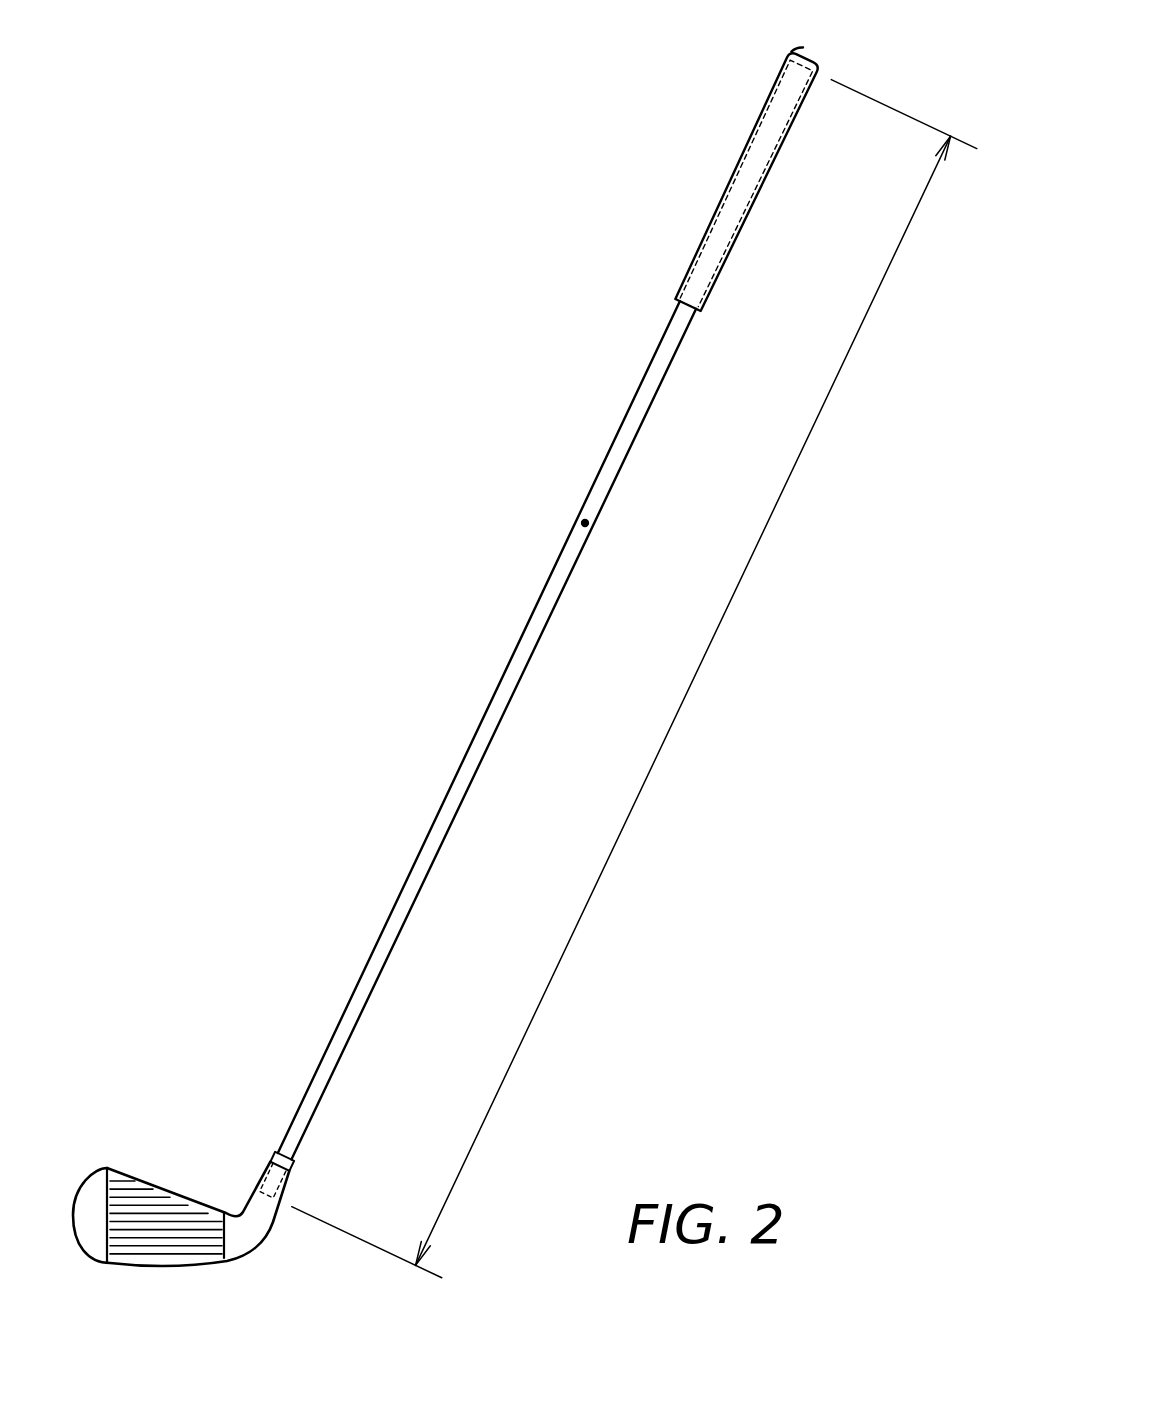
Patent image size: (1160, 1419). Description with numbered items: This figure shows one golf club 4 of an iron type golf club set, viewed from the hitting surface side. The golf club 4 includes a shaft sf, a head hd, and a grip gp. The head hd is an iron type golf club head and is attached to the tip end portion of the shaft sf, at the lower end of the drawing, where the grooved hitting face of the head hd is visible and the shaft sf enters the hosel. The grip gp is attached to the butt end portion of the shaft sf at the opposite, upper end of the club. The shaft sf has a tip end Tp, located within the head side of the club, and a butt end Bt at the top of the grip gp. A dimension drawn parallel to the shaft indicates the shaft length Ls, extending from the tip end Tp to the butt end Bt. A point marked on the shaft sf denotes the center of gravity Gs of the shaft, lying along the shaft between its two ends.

The golf club 4 is at (541, 142).
The butt end Bt is at (801, 62).
The grip gp is at (750, 172).
The shaft sf is at (640, 403).
The center of gravity of the shaft Gs is at (585, 523).
The shaft length Ls is at (634, 678).
The head hd is at (138, 1200).
The tip end Tp is at (267, 1194).